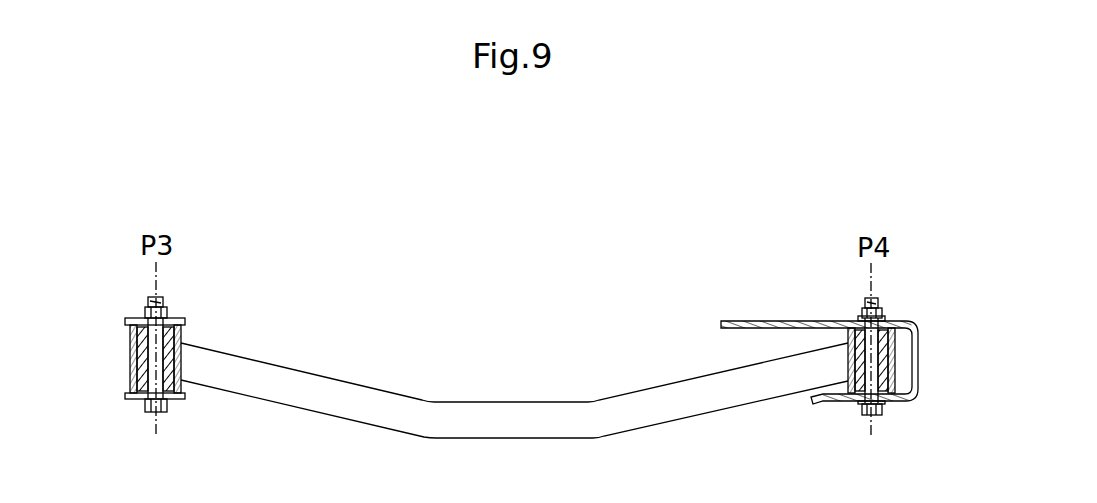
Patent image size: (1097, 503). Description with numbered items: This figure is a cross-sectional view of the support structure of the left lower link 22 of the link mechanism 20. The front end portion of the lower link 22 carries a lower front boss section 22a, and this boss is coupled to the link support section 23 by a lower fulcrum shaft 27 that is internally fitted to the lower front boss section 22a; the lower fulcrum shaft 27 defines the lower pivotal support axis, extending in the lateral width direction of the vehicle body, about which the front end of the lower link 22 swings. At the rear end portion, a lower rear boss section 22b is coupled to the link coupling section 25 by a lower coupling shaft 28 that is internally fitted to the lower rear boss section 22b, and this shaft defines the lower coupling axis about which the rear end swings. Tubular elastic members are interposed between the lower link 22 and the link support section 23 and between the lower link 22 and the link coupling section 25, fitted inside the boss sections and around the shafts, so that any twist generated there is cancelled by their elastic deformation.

The link mechanism 20 is at (356, 297).
The lower link 22 is at (517, 412).
The lower front boss section 22a is at (130, 343).
The lower rear boss section 22b is at (896, 345).
The link support section 23 is at (142, 322).
The link coupling section 25 is at (918, 348).
The lower fulcrum shaft 27 is at (147, 407).
The lower coupling shaft 28 is at (881, 410).